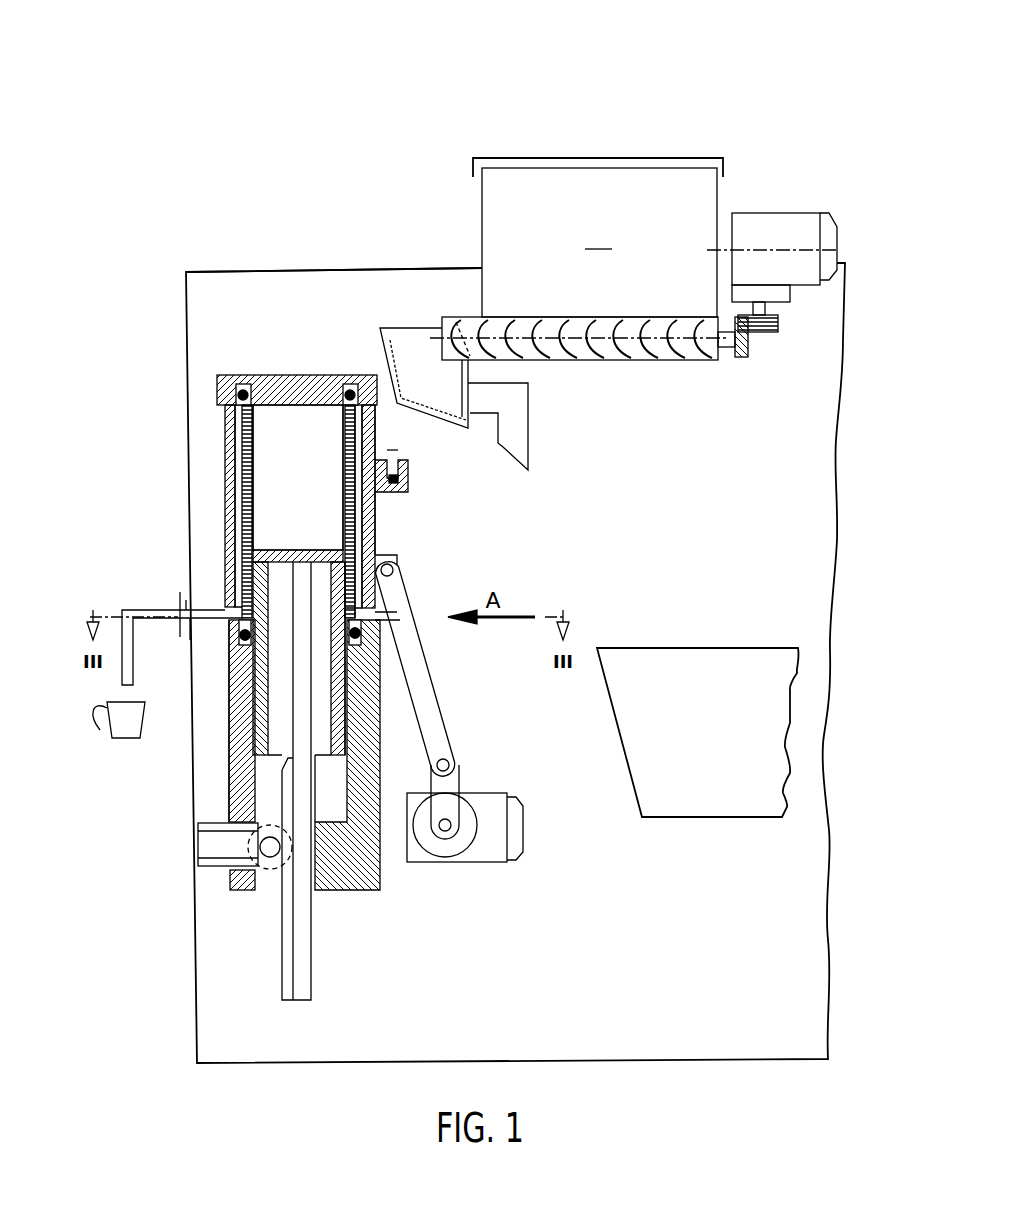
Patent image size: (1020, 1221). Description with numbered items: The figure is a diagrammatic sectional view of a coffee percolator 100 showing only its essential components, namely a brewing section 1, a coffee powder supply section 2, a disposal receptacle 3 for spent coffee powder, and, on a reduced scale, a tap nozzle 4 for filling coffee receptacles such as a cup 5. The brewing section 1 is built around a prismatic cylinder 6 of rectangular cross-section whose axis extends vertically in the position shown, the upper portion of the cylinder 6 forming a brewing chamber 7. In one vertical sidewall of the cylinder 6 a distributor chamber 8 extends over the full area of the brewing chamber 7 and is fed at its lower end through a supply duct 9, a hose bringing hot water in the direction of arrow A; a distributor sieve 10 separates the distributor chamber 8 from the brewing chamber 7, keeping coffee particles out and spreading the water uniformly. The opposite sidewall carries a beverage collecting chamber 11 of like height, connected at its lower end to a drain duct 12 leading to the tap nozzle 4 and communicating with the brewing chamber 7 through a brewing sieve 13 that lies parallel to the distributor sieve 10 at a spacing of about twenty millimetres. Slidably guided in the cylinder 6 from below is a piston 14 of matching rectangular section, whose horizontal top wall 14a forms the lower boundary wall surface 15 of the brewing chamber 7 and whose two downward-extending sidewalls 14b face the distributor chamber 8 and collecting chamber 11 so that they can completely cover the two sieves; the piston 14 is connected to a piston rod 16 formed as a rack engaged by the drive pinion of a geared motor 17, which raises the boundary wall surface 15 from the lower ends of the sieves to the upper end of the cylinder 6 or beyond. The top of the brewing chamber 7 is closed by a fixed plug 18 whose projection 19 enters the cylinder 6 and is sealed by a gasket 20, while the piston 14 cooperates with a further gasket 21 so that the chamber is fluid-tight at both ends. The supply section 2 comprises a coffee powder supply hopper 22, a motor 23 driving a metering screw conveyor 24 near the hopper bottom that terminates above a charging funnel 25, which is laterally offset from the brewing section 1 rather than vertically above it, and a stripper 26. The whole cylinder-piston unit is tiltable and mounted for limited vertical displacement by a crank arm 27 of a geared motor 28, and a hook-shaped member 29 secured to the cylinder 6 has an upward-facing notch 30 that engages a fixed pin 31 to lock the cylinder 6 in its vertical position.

The brewing section 1 is at (217, 470).
The coffee powder supply section 2 is at (535, 152).
The disposal receptacle 3 is at (708, 683).
The tap nozzle 4 is at (130, 667).
The cup 5 is at (127, 717).
The prismatic cylinder 6 is at (243, 790).
The brewing chamber 7 is at (292, 503).
The distributor chamber 8 is at (375, 503).
The supply duct 9 is at (405, 592).
The distributor sieve 10 is at (347, 517).
The beverage collecting chamber 11 is at (245, 440).
The drain duct 12 is at (170, 608).
The brewing sieve 13 is at (230, 450).
The piston 14 is at (237, 720).
The top wall 14a is at (380, 677).
The sidewalls 14b is at (250, 760).
The boundary wall surface 15 is at (270, 545).
The piston rod 16 is at (290, 918).
The geared motor 17 is at (225, 842).
The plug 18 is at (297, 378).
The projection 19 is at (273, 380).
The gasket 20 is at (243, 383).
The gasket 21 is at (237, 632).
The coffee powder supply hopper 22 is at (599, 242).
The motor 23 is at (762, 227).
The metering screw conveyor 24 is at (663, 347).
The charging funnel 25 is at (412, 342).
The stripper 26 is at (513, 427).
The crank arm 27 is at (443, 798).
The geared motor 28 is at (490, 848).
The hook-shaped member 29 is at (422, 487).
The notch 30 is at (393, 455).
The fixed pin 31 is at (408, 475).
The coffee percolator 100 is at (223, 268).